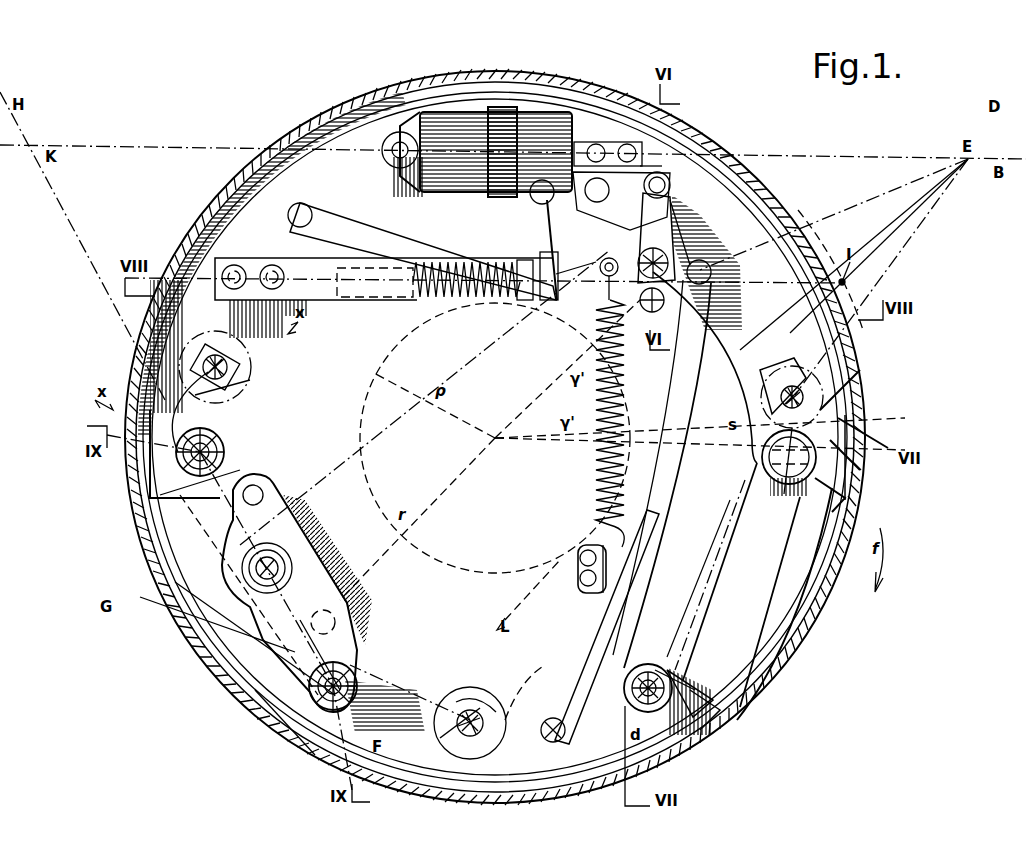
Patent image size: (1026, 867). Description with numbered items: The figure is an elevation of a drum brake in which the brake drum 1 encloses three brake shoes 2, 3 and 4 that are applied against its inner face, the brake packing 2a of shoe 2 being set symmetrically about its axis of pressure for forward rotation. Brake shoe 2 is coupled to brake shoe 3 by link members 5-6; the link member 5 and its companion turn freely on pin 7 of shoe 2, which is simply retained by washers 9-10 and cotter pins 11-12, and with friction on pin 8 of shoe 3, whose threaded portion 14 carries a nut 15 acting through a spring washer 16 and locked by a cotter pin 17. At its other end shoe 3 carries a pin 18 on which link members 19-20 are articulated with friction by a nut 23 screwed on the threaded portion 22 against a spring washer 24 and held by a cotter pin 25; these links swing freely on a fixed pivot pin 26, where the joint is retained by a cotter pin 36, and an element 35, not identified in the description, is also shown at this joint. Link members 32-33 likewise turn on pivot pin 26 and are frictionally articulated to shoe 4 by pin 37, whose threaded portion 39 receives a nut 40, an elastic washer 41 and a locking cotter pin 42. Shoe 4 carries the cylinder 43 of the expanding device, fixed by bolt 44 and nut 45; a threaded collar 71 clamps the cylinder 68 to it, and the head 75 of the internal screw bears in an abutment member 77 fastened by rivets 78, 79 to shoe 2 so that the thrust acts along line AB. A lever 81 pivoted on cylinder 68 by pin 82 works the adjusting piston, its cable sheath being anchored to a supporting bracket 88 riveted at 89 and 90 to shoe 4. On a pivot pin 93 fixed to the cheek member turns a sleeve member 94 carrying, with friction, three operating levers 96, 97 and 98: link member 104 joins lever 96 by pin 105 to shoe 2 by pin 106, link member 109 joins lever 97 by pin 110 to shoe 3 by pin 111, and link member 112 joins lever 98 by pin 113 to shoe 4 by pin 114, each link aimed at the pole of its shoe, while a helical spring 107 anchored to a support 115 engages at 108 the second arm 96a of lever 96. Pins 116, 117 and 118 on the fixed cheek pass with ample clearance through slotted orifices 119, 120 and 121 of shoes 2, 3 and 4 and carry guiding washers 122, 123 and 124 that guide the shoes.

The brake drum 1 is at (135, 548).
The brake shoe 2 is at (731, 225).
The brake packing 2a is at (860, 460).
The brake shoe 3 is at (470, 712).
The brake shoe 4 is at (258, 252).
The link member 5 is at (705, 476).
The link members 5-6 is at (735, 584).
The pin 7 is at (860, 440).
The pin 8 is at (596, 705).
The washers 9-10 is at (790, 484).
The cotter pins 11-12 is at (842, 480).
The threaded portion 14 is at (655, 712).
The nut 15 is at (662, 700).
The spring washer 16 is at (672, 690).
The cotter pin 17 is at (743, 707).
The pin 18 is at (312, 738).
The link members 19-20 is at (290, 612).
The threaded portion 22 is at (312, 645).
The nut 23 is at (330, 695).
The spring washer 24 is at (352, 666).
The cotter pin 25 is at (348, 690).
The fixed pivot pin 26 is at (288, 597).
The link members 32-33 is at (172, 500).
The bearing ring 35 is at (270, 547).
The cotter pin 36 is at (287, 558).
The pin 37 is at (212, 440).
The threaded portion 39 is at (218, 452).
The nut 40 is at (160, 455).
The elastic washer 41 is at (168, 472).
The cotter pin 42 is at (224, 462).
The cylinder 43 is at (425, 112).
The bolt 44 is at (395, 135).
The nut 45 is at (398, 150).
The cylinder 68 is at (548, 112).
The threaded collar 71 is at (500, 107).
The head 75 is at (578, 142).
The abutment member 77 is at (628, 150).
The rivet 78 is at (599, 152).
The rivet 79 is at (657, 180).
The lever 81 is at (545, 228).
The pin 82 is at (540, 198).
The supporting bracket 88 is at (322, 306).
The rivet 89 is at (232, 276).
The rivet 90 is at (270, 277).
The pivot pin 93 is at (656, 310).
The sleeve member 94 is at (677, 258).
The operating lever 96 is at (657, 230).
The second arm 96a is at (556, 332).
The operating lever 97 is at (690, 275).
The operating lever 98 is at (712, 272).
The link member 104 is at (612, 144).
The pin 105 is at (632, 183).
The pin 106 is at (598, 203).
The helical spring 107 is at (596, 470).
The engagement point 108 is at (608, 258).
The link member 109 is at (658, 500).
The pin 110 is at (800, 212).
The pin 111 is at (550, 718).
The link member 112 is at (400, 288).
The pin 113 is at (590, 335).
The pin 114 is at (298, 205).
The support 115 is at (582, 588).
The pin 116 is at (805, 402).
The pin 117 is at (470, 700).
The pin 118 is at (205, 366).
The slotted orifice 119 is at (800, 378).
The slotted orifice 120 is at (455, 710).
The slotted orifice 121 is at (210, 365).
The guiding washer 122 is at (812, 390).
The guiding washer 123 is at (516, 712).
The guiding washer 124 is at (248, 392).